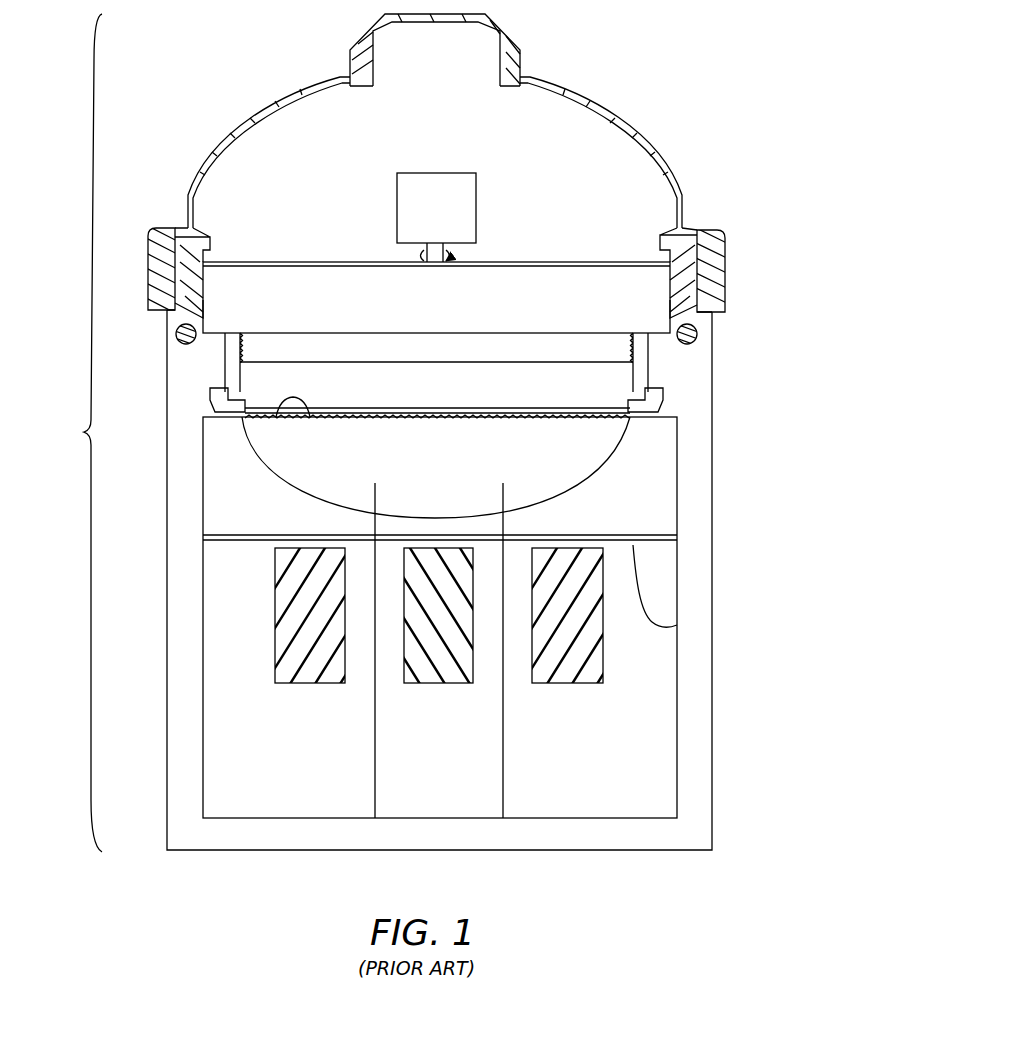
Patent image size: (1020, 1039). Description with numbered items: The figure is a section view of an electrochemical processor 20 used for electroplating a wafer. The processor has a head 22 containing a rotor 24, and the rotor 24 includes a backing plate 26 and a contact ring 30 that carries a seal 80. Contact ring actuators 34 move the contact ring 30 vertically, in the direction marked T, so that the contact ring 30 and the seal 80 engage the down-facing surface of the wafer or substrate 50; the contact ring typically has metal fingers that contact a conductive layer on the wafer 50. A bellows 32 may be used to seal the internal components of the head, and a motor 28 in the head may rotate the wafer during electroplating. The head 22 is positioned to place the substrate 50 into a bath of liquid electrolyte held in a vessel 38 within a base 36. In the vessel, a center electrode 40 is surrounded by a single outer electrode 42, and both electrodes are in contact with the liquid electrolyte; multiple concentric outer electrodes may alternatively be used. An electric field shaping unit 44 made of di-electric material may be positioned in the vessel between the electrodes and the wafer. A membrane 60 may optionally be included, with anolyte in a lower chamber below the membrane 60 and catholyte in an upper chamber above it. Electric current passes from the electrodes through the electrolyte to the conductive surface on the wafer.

The electrochemical processor 20 is at (78, 433).
The head 22 is at (604, 107).
The rotor 24 is at (212, 362).
The backing plate 26 is at (597, 387).
The motor 28 is at (406, 213).
The contact ring 30 is at (640, 438).
The bellows 32 is at (250, 350).
The contact ring actuators 34 is at (650, 374).
The base 36 is at (712, 505).
The vessel 38 is at (676, 563).
The center electrode 40 is at (430, 686).
The outer electrode 42 is at (300, 686).
The electric field shaping unit 44 is at (650, 515).
The wafer or substrate 50 is at (276, 422).
The membrane 60 is at (680, 625).
The seal 80 is at (640, 420).